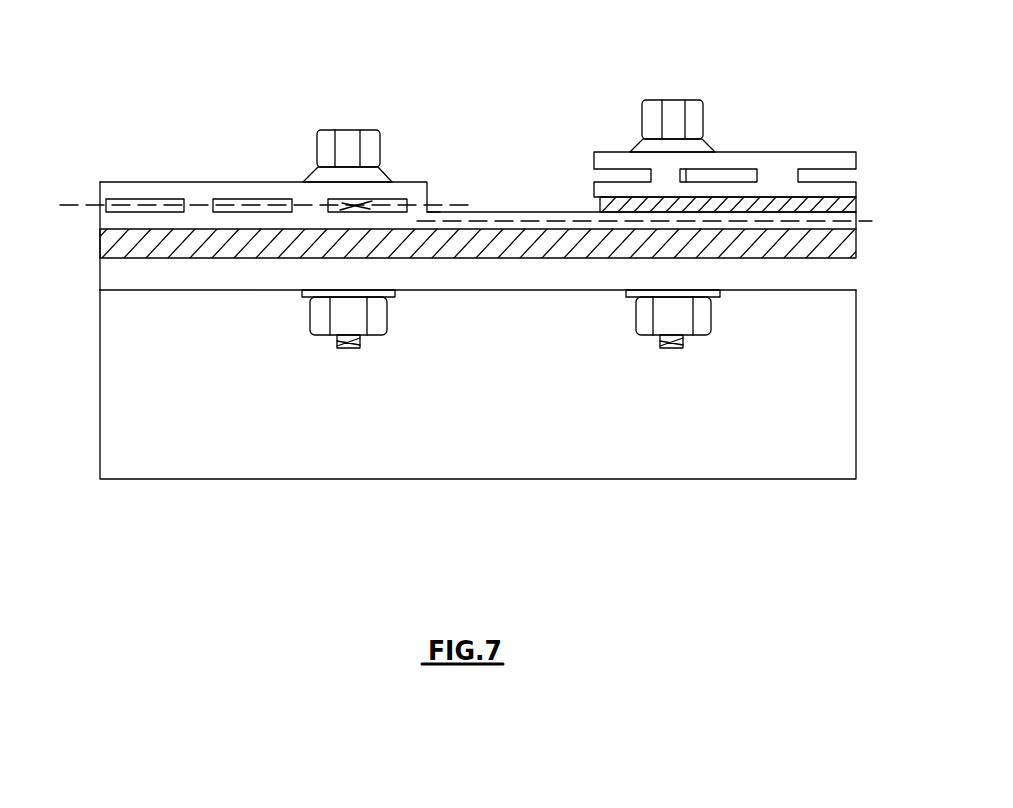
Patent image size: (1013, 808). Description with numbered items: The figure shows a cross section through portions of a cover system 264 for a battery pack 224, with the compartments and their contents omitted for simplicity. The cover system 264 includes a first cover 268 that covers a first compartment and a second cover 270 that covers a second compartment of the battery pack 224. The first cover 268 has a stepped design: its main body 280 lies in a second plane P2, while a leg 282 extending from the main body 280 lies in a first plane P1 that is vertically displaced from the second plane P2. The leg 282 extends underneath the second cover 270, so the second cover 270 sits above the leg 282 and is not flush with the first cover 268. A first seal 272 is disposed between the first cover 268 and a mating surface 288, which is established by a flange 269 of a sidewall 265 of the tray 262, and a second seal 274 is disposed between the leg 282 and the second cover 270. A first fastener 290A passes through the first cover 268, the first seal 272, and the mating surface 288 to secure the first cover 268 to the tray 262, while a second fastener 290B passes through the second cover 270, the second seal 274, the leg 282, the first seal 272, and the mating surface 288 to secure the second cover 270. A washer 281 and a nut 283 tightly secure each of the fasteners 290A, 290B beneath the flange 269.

The battery pack 224 is at (793, 78).
The tray 262 is at (494, 493).
The cover system 264 is at (103, 152).
The sidewall 265 is at (525, 423).
The first cover 268 is at (215, 178).
The flange 269 is at (410, 283).
The second cover 270 is at (765, 139).
The first seal 272 is at (443, 248).
The second seal 274 is at (808, 202).
The main body 280 is at (258, 190).
The washer 281 is at (306, 296).
The leg 282 is at (564, 215).
The nut 283 is at (323, 323).
The mating surface 288 is at (588, 272).
The first fastener 290A is at (352, 118).
The second fastener 290B is at (681, 85).
The first plane P1 is at (657, 222).
The second plane P2 is at (446, 205).